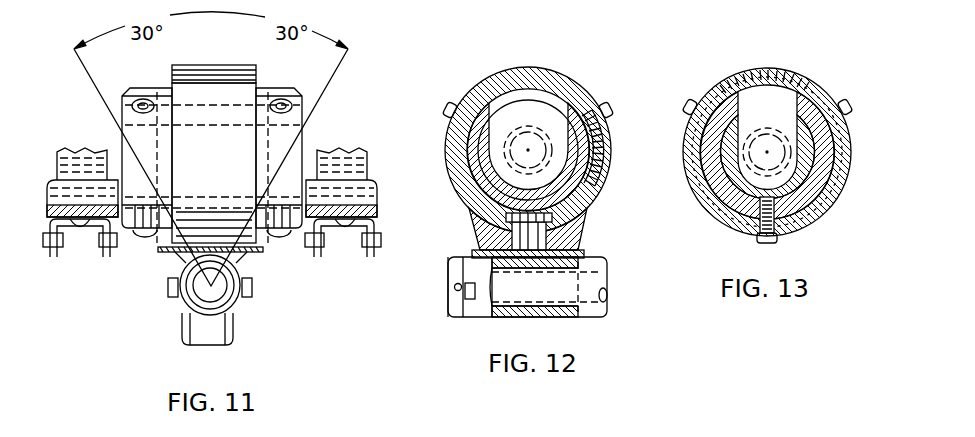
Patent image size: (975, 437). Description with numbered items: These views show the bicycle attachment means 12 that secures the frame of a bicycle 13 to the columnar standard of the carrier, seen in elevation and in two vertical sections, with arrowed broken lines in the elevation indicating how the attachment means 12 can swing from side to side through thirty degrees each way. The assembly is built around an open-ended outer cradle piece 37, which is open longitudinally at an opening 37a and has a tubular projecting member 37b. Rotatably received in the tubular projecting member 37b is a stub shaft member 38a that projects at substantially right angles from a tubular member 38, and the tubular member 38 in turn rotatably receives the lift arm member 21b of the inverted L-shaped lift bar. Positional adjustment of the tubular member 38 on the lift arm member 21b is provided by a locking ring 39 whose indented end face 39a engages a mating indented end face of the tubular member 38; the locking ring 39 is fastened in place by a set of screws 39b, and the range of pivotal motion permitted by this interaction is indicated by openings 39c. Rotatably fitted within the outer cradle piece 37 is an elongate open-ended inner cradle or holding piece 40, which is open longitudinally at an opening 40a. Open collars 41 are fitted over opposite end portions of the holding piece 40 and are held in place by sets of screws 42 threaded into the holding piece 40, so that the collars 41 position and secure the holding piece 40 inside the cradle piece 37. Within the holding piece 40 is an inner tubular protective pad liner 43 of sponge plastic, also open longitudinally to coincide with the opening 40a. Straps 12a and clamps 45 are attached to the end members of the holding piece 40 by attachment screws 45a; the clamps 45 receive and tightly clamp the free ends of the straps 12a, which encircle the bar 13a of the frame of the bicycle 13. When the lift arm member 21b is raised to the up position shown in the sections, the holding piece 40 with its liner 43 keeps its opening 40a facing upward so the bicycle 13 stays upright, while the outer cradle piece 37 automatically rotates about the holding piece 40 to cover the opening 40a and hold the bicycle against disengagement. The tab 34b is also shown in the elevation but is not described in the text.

In FIG. 11, the bicycle attachment means 12 is at (212, 10).
In FIG. 11, the bicycle 13 is at (282, 52).
In FIG. 11, the strap 12a is at (87, 150).
In FIG. 12, the bar of the bicycle frame 13a is at (526, 130).
In FIG. 13, the bar of the bicycle frame 13a is at (770, 130).
In FIG. 11, the lift arm member 21b is at (232, 330).
In FIG. 12, the lift arm member 21b is at (598, 284).
In FIG. 11, the side tab 34b is at (172, 284).
In FIG. 11, the outer cradle piece 37 is at (221, 168).
In FIG. 12, the outer cradle piece 37 is at (536, 76).
In FIG. 13, the outer cradle piece 37 is at (757, 72).
In FIG. 12, the longitudinal opening of outer cradle piece 37a is at (602, 139).
In FIG. 12, the tubular projecting member 37b is at (480, 241).
In FIG. 11, the tubular member 38 is at (213, 247).
In FIG. 12, the tubular member 38 is at (553, 316).
In FIG. 12, the stub shaft member 38a is at (553, 226).
In FIG. 12, the locking ring 39 is at (452, 300).
In FIG. 12, the indented end face of locking ring 39a is at (470, 308).
In FIG. 11, the screws 39b is at (246, 288).
In FIG. 12, the screws 39b is at (452, 288).
In FIG. 11, the openings 39c is at (181, 296).
In FIG. 12, the inner cradle or holding piece 40 is at (592, 196).
In FIG. 13, the inner cradle or holding piece 40 is at (797, 207).
In FIG. 11, the longitudinal opening of holding piece 40a is at (48, 200).
In FIG. 11, the open collar 41 is at (138, 90).
In FIG. 13, the open collar 41 is at (723, 210).
In FIG. 11, the screws 42 is at (133, 107).
In FIG. 12, the screws 42 is at (446, 108).
In FIG. 13, the screws 42 is at (690, 99).
In FIG. 12, the inner tubular protective pad liner 43 is at (605, 176).
In FIG. 13, the inner tubular protective pad liner 43 is at (830, 174).
In FIG. 11, the clamp 45 is at (52, 252).
In FIG. 11, the attachment screw 45a is at (80, 224).